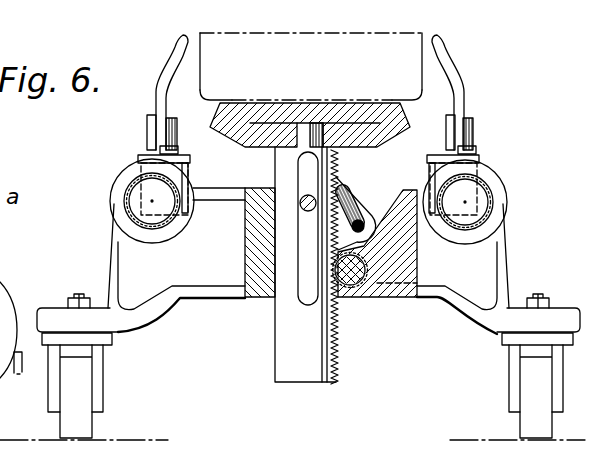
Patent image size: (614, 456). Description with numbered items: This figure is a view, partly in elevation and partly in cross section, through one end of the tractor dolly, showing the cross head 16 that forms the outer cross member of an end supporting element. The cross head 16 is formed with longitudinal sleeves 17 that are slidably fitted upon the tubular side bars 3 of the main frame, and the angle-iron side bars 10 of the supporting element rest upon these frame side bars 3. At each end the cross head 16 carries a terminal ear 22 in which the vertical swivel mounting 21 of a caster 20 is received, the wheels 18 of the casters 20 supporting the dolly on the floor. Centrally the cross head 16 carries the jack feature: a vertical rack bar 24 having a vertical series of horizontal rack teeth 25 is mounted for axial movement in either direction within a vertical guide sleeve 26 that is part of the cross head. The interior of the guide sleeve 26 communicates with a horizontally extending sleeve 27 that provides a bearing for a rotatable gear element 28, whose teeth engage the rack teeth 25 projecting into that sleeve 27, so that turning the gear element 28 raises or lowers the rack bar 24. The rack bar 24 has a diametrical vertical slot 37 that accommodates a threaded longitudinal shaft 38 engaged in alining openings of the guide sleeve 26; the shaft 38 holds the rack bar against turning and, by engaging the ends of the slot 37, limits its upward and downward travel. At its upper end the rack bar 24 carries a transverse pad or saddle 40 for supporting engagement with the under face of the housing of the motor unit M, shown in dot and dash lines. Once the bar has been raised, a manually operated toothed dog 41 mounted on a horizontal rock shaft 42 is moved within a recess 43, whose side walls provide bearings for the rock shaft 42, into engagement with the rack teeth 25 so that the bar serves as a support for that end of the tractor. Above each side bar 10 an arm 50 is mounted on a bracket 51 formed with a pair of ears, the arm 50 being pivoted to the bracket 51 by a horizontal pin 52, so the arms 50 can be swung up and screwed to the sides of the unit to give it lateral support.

The motor unit M is at (311, 66).
The side bars 3 is at (124, 198).
The side bars 10 is at (138, 169).
The cross head 16 is at (106, 250).
The sleeves 17 is at (118, 218).
The wheels 18 is at (78, 371).
The casters 20 is at (103, 395).
The vertical swivel mounting 21 is at (80, 298).
The terminal ear 22 is at (50, 317).
The vertical bar 24 is at (311, 370).
The rack teeth 25 is at (339, 350).
The vertical guide sleeve 26 is at (262, 237).
The horizontally extending sleeve 27 is at (387, 286).
The gear element 28 is at (353, 284).
The vertical slot 37 is at (294, 294).
The threaded longitudinal shaft 38 is at (300, 201).
The pad or saddle 40 is at (287, 128).
The toothed dog 41 is at (356, 194).
The rock shaft 42 is at (373, 202).
The recess 43 is at (388, 205).
The arms 50 is at (175, 44).
The brackets 51 is at (147, 118).
The horizontal pins 52 is at (148, 128).